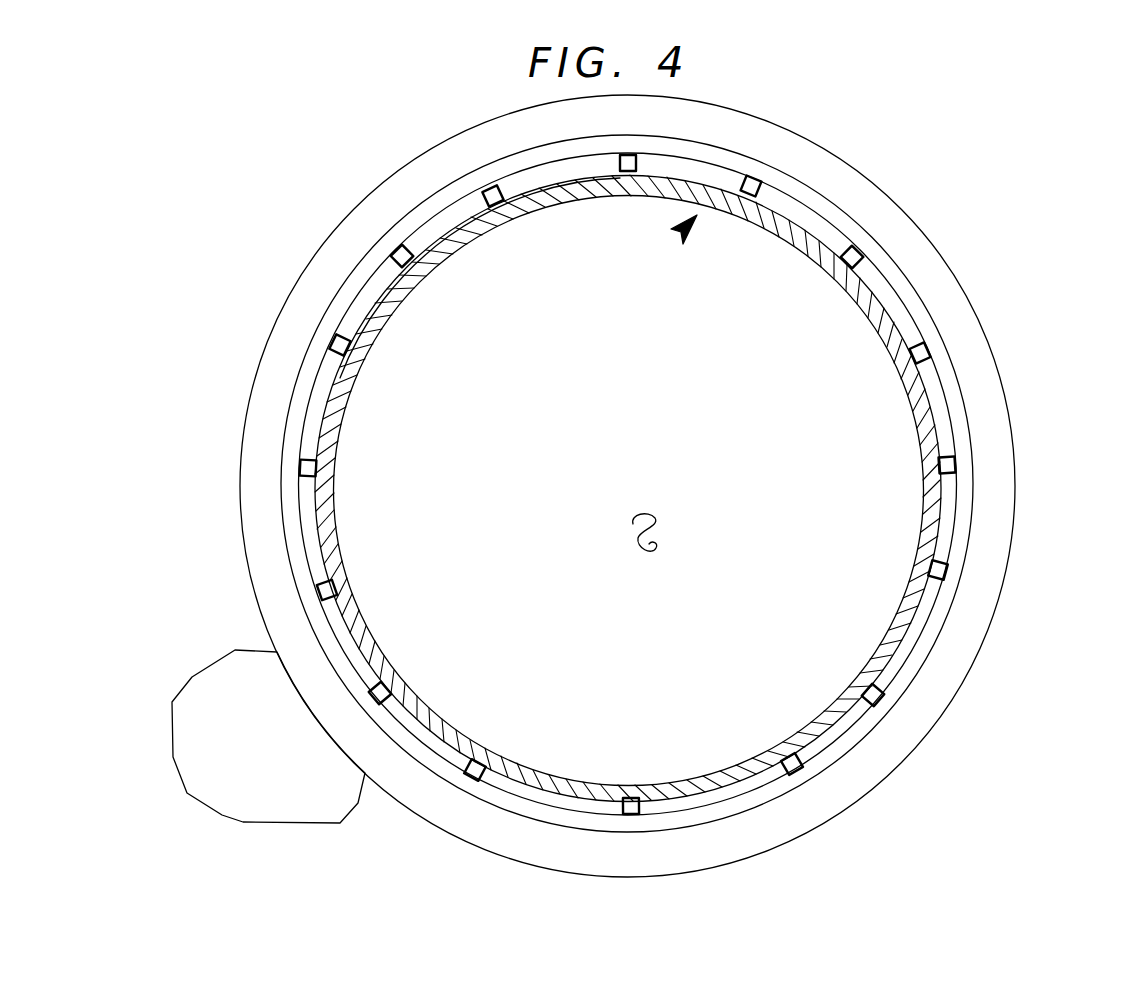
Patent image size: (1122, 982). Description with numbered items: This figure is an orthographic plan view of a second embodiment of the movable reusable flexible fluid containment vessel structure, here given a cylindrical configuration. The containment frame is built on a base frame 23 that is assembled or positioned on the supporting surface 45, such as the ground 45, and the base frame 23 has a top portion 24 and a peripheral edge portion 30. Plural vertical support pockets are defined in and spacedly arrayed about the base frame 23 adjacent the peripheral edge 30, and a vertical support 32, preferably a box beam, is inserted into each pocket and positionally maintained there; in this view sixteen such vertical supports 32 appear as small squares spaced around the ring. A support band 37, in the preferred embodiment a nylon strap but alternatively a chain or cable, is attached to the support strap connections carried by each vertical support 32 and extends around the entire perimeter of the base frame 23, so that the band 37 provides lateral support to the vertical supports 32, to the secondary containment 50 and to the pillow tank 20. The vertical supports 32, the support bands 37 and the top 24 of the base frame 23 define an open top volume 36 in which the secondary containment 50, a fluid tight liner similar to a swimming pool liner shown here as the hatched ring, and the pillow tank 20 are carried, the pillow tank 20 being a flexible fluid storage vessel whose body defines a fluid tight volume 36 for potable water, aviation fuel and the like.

The pillow tank 20 is at (662, 272).
The base frame 23 is at (232, 551).
The top portion of the base frame 24 is at (1002, 428).
The peripheral edge portion 30 is at (963, 295).
The vertical support 32 is at (488, 187).
The fluid tight volume / open top volume 36 is at (635, 527).
The support band 37 is at (845, 207).
The supporting surface 45 is at (280, 748).
The secondary containment 50 is at (905, 429).